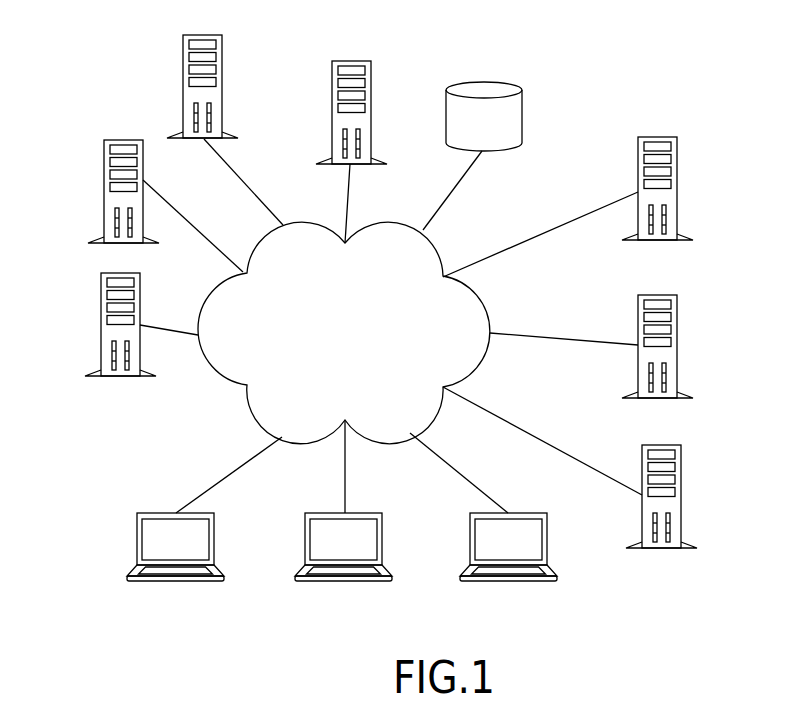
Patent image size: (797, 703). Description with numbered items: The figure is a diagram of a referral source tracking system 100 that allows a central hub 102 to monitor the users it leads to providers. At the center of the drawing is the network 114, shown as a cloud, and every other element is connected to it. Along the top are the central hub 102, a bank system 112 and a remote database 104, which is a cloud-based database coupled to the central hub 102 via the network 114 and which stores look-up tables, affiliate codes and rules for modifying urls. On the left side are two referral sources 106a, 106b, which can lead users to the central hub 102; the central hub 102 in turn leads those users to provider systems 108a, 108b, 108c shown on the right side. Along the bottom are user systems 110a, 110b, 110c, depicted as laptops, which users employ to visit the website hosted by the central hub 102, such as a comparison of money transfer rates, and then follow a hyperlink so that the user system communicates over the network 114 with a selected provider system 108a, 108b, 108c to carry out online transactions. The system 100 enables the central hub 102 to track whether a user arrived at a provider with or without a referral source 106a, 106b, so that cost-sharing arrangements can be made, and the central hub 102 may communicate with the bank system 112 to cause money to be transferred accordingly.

The referral source tracking system 100 is at (662, 38).
The central hub 102 is at (350, 60).
The remote database 104 is at (482, 82).
The referral source 106a is at (104, 190).
The referral source 106b is at (101, 330).
The provider system 108a is at (677, 188).
The provider system 108b is at (677, 352).
The provider system 108c is at (680, 485).
The user system 110a is at (188, 581).
The user system 110b is at (352, 581).
The user system 110c is at (517, 581).
The bank system 112 is at (182, 62).
The network 114 is at (432, 246).